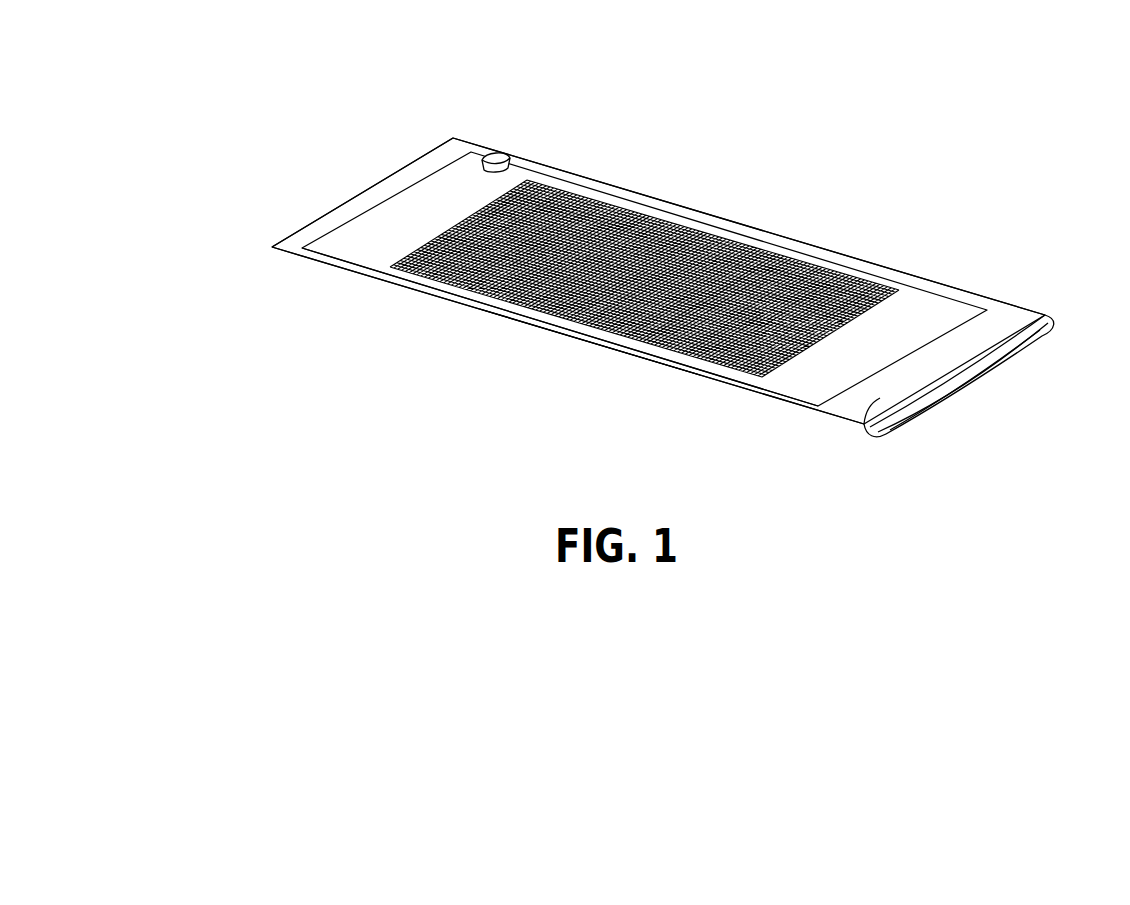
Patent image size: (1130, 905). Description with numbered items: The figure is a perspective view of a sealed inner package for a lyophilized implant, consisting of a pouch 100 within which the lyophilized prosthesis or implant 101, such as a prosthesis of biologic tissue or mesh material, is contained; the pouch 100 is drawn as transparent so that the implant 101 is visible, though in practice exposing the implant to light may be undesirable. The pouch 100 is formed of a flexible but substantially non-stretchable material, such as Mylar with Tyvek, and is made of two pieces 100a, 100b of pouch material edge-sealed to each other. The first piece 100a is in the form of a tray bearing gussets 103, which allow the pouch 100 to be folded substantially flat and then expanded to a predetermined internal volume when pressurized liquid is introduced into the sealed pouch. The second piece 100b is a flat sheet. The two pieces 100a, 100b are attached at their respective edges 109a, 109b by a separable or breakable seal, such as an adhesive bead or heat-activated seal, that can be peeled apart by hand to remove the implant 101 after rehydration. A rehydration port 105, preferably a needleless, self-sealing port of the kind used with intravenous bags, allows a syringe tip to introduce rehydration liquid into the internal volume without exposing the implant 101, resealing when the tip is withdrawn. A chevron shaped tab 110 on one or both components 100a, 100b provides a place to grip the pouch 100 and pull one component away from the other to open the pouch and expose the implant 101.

The pouch 100 is at (658, 411).
The first piece 100a is at (379, 298).
The second piece 100b is at (347, 248).
The lyophilized implant 101 is at (495, 235).
The gussets 103 is at (925, 387).
The rehydration port 105 is at (495, 156).
The edge of first piece 109a is at (577, 371).
The edge of second piece 109b is at (289, 222).
The chevron shaped tab 110 is at (378, 193).